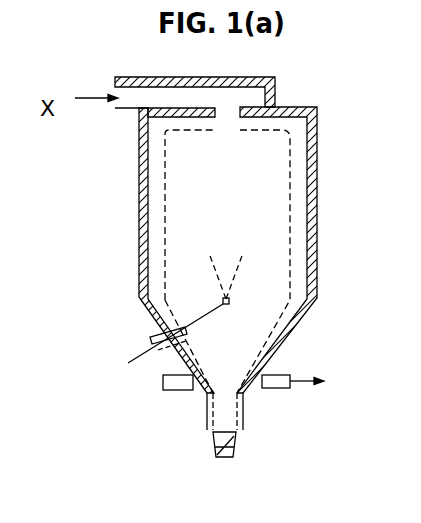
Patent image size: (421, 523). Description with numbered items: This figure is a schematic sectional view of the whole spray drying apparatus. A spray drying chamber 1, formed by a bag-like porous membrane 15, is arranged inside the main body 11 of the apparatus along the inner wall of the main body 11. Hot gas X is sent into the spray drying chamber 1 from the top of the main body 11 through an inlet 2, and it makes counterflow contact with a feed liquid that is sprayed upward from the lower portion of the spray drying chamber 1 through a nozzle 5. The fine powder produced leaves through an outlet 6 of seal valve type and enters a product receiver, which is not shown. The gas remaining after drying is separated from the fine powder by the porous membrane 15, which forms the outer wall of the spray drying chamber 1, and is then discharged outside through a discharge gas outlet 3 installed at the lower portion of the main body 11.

The spray drying chamber 1 is at (218, 268).
The inlet 2 is at (141, 103).
The discharge gas outlet 3 is at (286, 374).
The nozzle 5 is at (165, 331).
The outlet 6 is at (210, 435).
The main body 11 is at (313, 206).
The porous membrane 15 is at (288, 172).